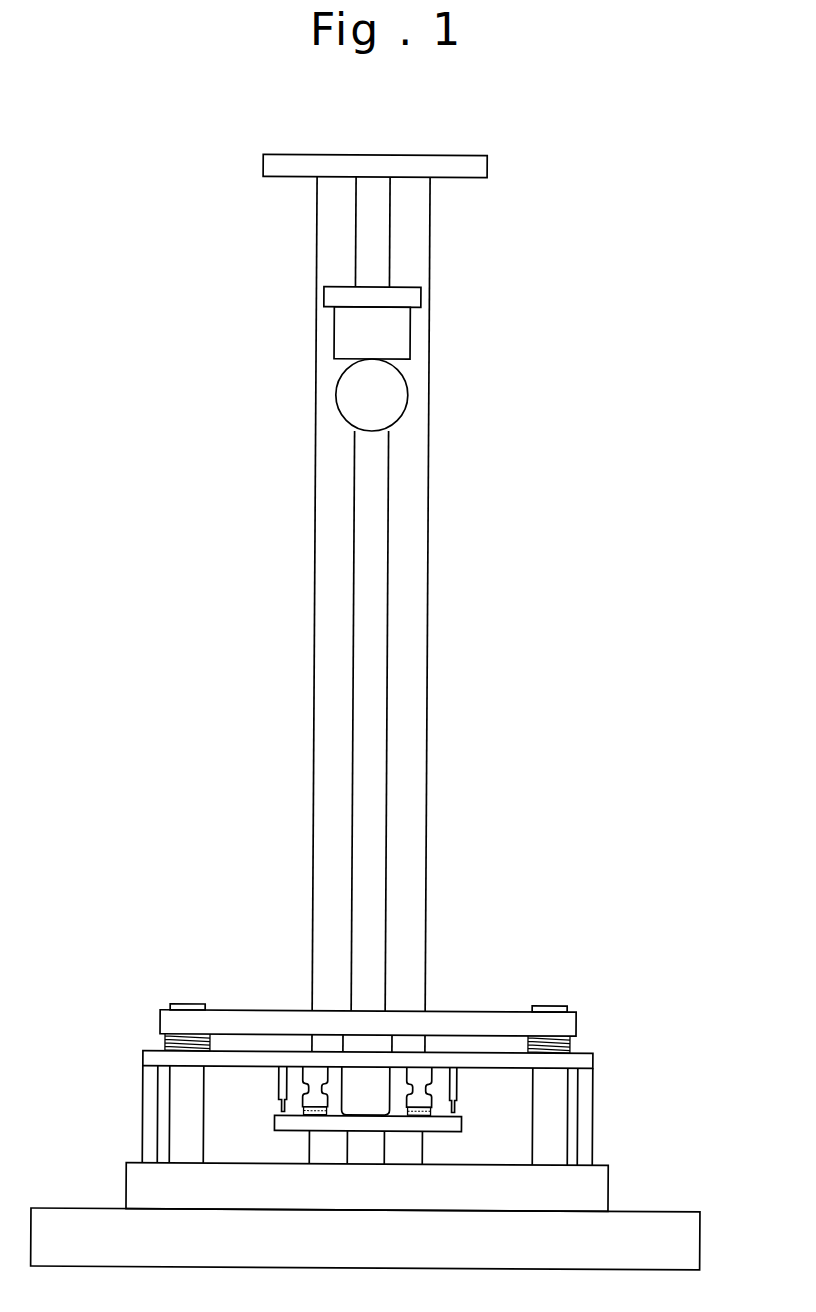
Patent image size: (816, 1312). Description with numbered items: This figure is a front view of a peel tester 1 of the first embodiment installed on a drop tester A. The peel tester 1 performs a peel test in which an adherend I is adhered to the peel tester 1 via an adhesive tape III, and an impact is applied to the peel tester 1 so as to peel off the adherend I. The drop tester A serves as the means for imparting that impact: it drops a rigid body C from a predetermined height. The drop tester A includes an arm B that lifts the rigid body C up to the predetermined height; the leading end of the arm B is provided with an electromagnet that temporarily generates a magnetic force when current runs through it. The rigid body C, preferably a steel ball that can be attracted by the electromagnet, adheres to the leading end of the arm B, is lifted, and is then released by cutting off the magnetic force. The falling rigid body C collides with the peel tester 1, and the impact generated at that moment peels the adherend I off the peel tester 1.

The drop tester A is at (332, 583).
The arm B is at (390, 335).
The rigid body C is at (393, 397).
The peel tester 1 is at (366, 1110).
The adherend I is at (286, 1123).
The adhesive tape III is at (315, 1110).